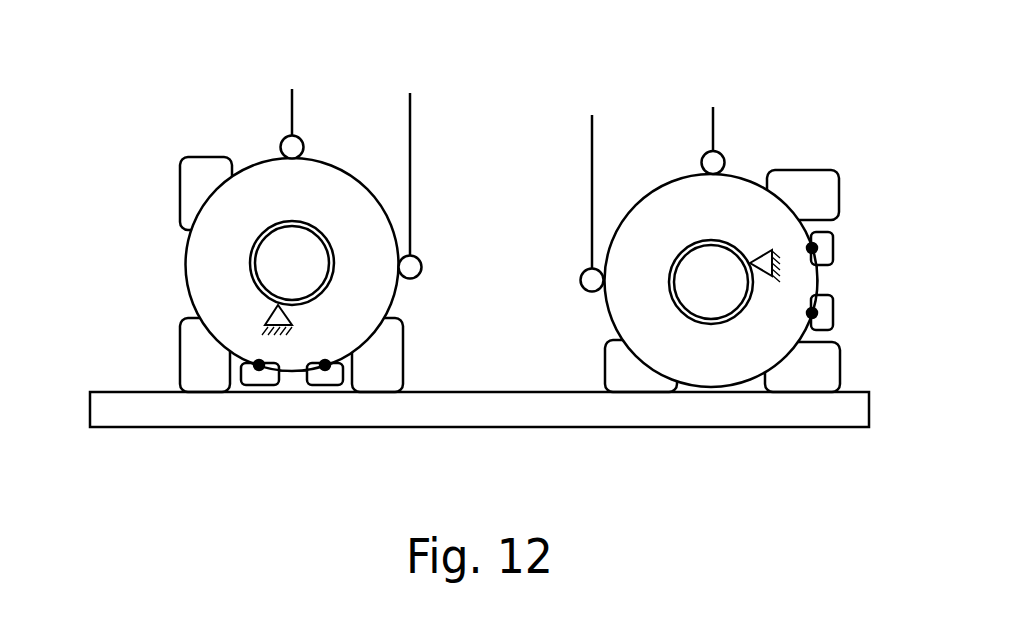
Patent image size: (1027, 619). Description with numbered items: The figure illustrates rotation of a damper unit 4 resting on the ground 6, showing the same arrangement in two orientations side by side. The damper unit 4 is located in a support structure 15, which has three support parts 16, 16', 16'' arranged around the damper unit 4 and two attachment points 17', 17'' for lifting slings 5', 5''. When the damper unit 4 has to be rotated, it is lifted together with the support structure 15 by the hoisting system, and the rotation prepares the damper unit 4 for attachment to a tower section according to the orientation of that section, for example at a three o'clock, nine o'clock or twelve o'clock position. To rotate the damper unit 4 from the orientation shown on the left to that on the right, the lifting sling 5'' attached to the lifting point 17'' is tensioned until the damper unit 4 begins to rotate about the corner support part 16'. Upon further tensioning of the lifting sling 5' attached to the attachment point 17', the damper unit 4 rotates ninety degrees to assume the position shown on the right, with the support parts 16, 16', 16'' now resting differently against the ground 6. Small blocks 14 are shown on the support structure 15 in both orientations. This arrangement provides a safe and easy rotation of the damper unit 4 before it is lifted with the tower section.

The damper unit 4 is at (197, 258).
The lifting sling 5' is at (479, 163).
The lifting sling 5'' is at (600, 156).
The ground 6 is at (815, 413).
The sensor block 14 is at (265, 382).
The support structure 15 is at (115, 203).
The support part 16 is at (384, 250).
The corner support part 16' is at (514, 355).
The support part 16'' is at (612, 240).
The attachment point 17' is at (442, 225).
The lifting point 17'' is at (562, 211).